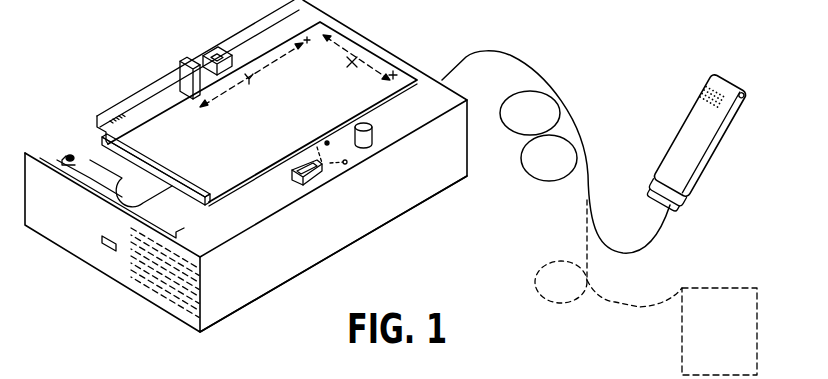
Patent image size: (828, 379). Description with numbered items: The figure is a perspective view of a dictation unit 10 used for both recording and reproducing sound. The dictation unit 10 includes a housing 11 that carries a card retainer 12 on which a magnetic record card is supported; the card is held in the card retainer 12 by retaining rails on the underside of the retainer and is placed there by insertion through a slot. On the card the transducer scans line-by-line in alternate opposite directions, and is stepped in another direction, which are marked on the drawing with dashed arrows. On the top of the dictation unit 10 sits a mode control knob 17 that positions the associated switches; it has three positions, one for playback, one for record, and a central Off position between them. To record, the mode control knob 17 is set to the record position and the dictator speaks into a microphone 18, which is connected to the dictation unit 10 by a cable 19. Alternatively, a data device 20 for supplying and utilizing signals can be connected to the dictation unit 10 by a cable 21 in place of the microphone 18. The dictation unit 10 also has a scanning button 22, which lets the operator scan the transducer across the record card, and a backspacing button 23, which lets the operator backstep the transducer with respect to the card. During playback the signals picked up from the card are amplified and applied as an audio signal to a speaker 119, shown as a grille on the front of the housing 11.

The dictation unit 10 is at (398, 211).
The housing 11 is at (456, 181).
The card retainer 12 is at (175, 133).
The mode control knob 17 is at (322, 176).
The microphone 18 is at (720, 162).
The cable 19 is at (589, 185).
The data device 20 is at (720, 288).
The cable 21 is at (610, 301).
The scanning button 22 is at (192, 62).
The backspacing button 23 is at (220, 47).
The speaker 119 is at (173, 288).